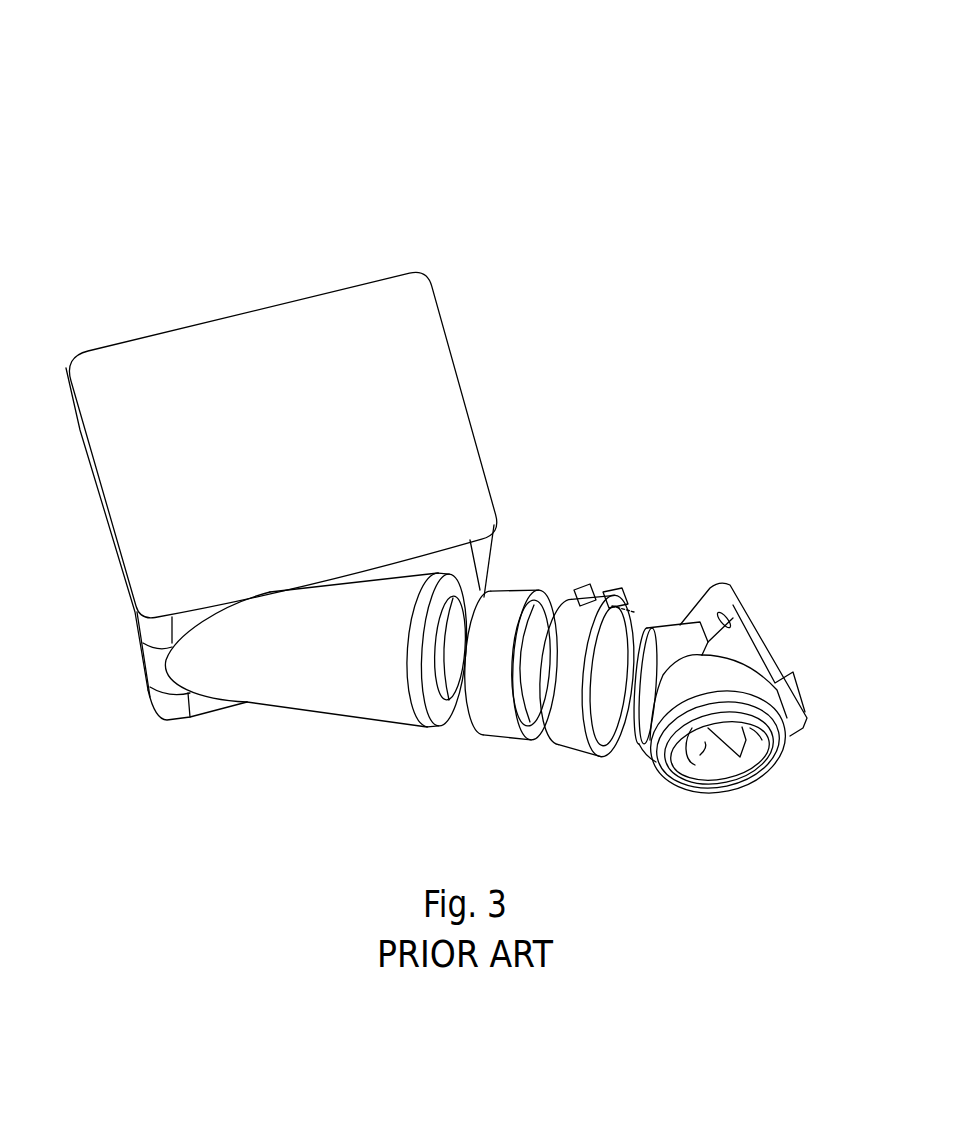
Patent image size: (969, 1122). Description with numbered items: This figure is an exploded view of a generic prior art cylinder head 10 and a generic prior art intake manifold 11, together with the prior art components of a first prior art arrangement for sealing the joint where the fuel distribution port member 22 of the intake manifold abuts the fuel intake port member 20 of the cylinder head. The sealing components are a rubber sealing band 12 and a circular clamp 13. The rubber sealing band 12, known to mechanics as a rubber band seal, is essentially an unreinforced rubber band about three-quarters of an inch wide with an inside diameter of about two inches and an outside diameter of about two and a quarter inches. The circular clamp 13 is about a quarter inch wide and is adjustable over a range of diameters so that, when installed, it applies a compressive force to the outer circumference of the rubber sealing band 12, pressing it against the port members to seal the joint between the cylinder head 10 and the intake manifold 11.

The cylinder head 10 is at (236, 320).
The intake manifold 11 is at (746, 591).
The rubber sealing band 12 is at (507, 627).
The circular clamp 13 is at (593, 622).
The fuel intake port member 20 is at (423, 697).
The fuel distribution port member 22 is at (627, 730).